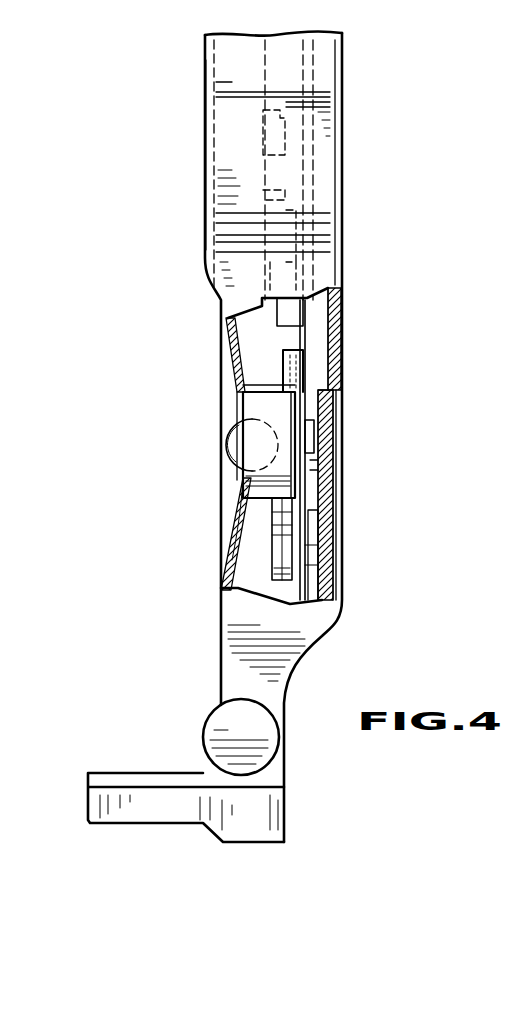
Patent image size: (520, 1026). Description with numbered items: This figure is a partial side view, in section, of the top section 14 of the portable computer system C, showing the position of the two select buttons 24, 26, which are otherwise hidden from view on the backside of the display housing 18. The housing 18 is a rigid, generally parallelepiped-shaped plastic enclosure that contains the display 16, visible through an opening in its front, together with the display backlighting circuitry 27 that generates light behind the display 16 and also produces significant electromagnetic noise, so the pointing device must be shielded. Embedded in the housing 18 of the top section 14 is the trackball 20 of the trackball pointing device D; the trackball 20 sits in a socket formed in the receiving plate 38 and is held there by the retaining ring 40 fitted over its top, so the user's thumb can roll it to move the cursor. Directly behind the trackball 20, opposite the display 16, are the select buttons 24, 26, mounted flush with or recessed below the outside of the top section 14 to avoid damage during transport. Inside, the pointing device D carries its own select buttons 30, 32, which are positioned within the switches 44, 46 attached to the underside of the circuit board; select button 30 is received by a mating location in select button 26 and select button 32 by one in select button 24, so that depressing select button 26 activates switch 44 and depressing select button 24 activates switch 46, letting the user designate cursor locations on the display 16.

The top section 14 is at (345, 106).
The display 16 is at (205, 172).
The housing 18 is at (345, 172).
The display backlighting circuitry 27 is at (303, 219).
The trackball pointing device D is at (322, 347).
The switch 44 is at (332, 400).
The select button 26 is at (333, 426).
The portable computer system C is at (360, 442).
The select button 30 is at (337, 463).
The trackball 20 is at (222, 443).
The retaining ring 40 is at (240, 483).
The receiving plate 38 is at (226, 535).
The select button 32 is at (335, 541).
The select button 24 is at (333, 571).
The switch 46 is at (328, 603).